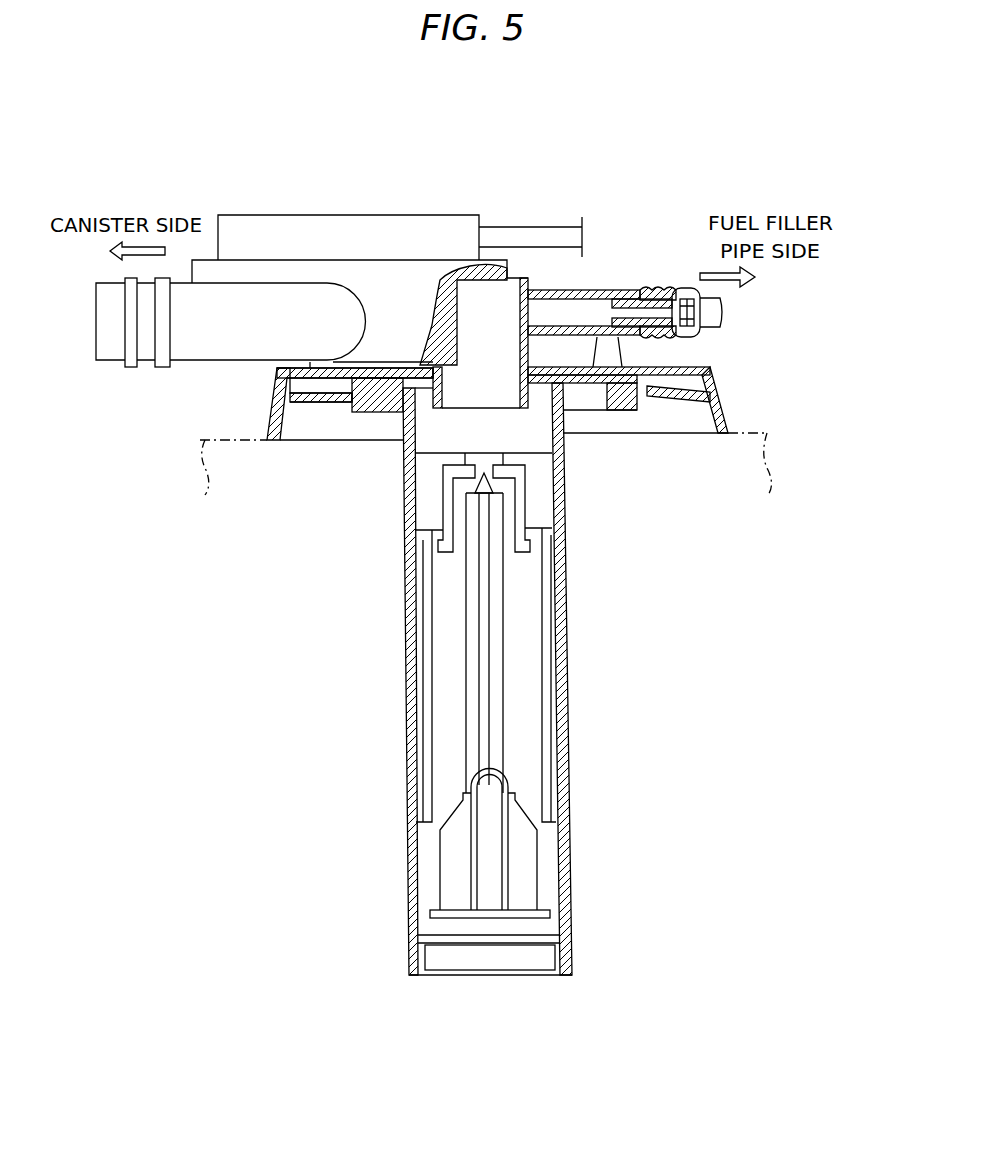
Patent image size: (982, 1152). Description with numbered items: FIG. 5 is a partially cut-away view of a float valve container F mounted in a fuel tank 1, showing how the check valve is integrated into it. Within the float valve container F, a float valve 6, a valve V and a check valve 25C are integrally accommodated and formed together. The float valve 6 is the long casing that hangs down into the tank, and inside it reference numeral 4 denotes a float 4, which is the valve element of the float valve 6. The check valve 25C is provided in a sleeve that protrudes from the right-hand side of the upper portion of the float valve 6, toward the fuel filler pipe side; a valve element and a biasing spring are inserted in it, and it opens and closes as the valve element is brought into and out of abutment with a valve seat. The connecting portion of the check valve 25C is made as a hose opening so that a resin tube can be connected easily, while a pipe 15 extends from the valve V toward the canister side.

The fuel tank 1 is at (225, 435).
The float 4 is at (520, 877).
The float valve 6 is at (585, 570).
The canister pipe 15 is at (532, 237).
The check valve 25C is at (643, 297).
The valve V is at (340, 208).
The float valve container F is at (436, 186).